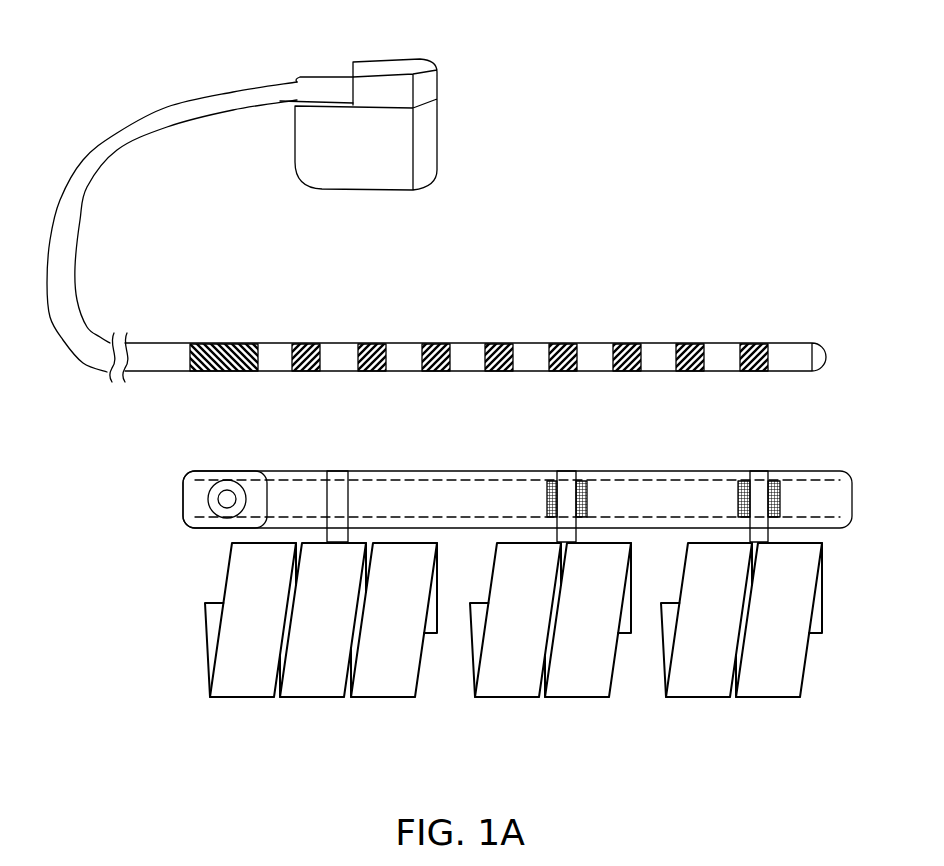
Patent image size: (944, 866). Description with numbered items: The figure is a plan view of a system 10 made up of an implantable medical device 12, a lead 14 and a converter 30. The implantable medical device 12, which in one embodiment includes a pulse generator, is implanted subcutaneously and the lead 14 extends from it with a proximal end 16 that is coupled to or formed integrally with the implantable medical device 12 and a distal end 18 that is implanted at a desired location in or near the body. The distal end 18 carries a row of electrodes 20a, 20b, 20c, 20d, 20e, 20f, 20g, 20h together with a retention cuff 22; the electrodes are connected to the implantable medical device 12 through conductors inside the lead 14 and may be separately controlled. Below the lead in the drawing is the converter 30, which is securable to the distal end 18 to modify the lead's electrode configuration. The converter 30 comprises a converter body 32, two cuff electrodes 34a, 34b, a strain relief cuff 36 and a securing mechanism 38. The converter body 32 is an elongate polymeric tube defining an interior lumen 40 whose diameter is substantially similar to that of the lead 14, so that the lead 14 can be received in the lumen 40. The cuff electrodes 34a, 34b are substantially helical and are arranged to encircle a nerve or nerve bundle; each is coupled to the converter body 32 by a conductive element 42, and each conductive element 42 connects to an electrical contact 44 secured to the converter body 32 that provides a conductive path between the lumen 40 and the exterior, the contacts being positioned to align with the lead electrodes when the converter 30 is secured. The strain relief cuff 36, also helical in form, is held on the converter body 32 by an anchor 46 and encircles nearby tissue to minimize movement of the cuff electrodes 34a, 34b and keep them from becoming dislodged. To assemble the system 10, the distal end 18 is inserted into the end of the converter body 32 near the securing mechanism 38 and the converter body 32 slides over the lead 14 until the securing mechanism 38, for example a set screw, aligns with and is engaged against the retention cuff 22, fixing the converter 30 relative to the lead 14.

The system 10 is at (698, 198).
The implantable medical device 12 is at (438, 150).
The lead 14 is at (92, 150).
The proximal end 16 is at (284, 70).
The distal end 18 is at (821, 326).
The electrode 20a is at (314, 372).
The electrode 20b is at (380, 372).
The electrode 20c is at (444, 372).
The electrode 20d is at (507, 372).
The electrode 20e is at (571, 372).
The electrode 20f is at (635, 372).
The electrode 20g is at (698, 372).
The electrode 20h is at (762, 372).
The retention cuff 22 is at (218, 343).
The converter 30 is at (172, 527).
The converter body 32 is at (820, 471).
The cuff electrode 34a is at (560, 697).
The cuff electrode 34b is at (753, 697).
The strain relief cuff 36 is at (297, 697).
The securing mechanism 38 is at (227, 480).
The interior lumen 40 is at (835, 499).
The conductive element 42 is at (565, 470).
The electrical contact 44 is at (588, 502).
The anchor 46 is at (337, 471).